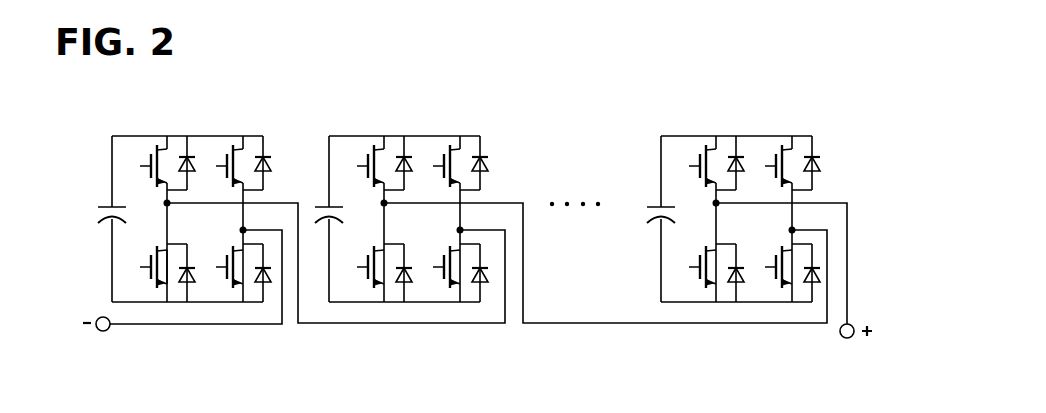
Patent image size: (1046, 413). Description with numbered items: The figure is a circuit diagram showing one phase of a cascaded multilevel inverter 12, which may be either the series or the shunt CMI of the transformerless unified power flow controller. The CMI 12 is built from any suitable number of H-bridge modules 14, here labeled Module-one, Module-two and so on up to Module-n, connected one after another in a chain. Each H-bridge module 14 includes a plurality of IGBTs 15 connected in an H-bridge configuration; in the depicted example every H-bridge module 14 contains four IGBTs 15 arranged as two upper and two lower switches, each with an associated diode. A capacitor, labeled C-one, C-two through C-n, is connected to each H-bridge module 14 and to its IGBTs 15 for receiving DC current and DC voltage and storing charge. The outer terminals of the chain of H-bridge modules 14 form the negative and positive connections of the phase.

The cascaded multilevel inverter 12 is at (80, 160).
The H-bridge module 14 is at (126, 136).
The IGBT 15 is at (158, 284).